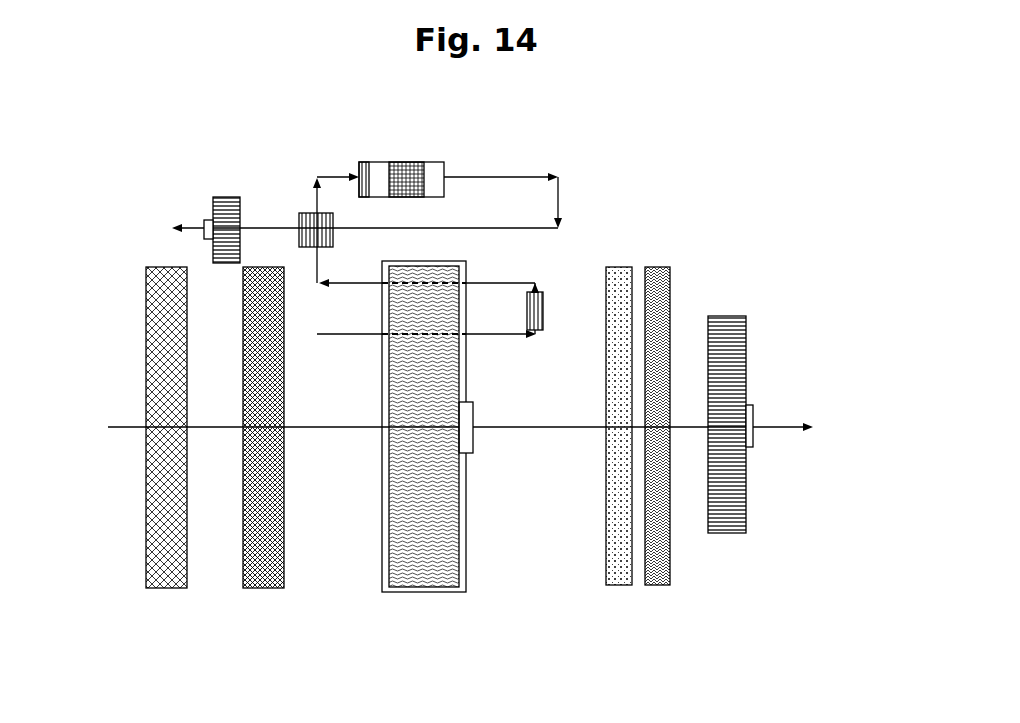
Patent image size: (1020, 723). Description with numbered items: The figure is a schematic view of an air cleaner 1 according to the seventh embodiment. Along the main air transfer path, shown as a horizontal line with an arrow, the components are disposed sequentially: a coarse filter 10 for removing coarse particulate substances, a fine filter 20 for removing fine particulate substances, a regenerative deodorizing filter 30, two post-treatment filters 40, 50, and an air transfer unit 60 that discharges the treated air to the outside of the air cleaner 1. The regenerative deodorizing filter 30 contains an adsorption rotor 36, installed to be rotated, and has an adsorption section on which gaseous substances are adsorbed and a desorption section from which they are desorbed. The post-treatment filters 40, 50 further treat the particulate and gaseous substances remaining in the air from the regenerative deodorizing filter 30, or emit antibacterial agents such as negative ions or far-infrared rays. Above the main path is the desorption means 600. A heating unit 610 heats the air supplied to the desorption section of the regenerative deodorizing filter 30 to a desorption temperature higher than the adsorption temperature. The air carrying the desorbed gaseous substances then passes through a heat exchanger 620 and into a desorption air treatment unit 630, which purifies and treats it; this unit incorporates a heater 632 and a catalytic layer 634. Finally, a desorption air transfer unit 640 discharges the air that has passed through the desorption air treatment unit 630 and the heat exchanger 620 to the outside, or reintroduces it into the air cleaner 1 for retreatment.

The air cleaner 1 is at (786, 248).
The coarse filter 10 is at (167, 583).
The fine filter 20 is at (264, 583).
The regenerative deodorizing filter 30 is at (401, 601).
The adsorption rotor 36 is at (452, 526).
The post-treatment filter 40 is at (620, 580).
The post-treatment filter 50 is at (662, 580).
The air transfer unit 60 is at (730, 528).
The desorption means 600 is at (499, 171).
The heating unit 610 is at (544, 320).
The heat exchanger 620 is at (305, 212).
The desorption air treatment unit 630 is at (436, 155).
The heater 632 is at (363, 160).
The catalytic layer 634 is at (398, 160).
The desorption air transfer unit 640 is at (223, 204).